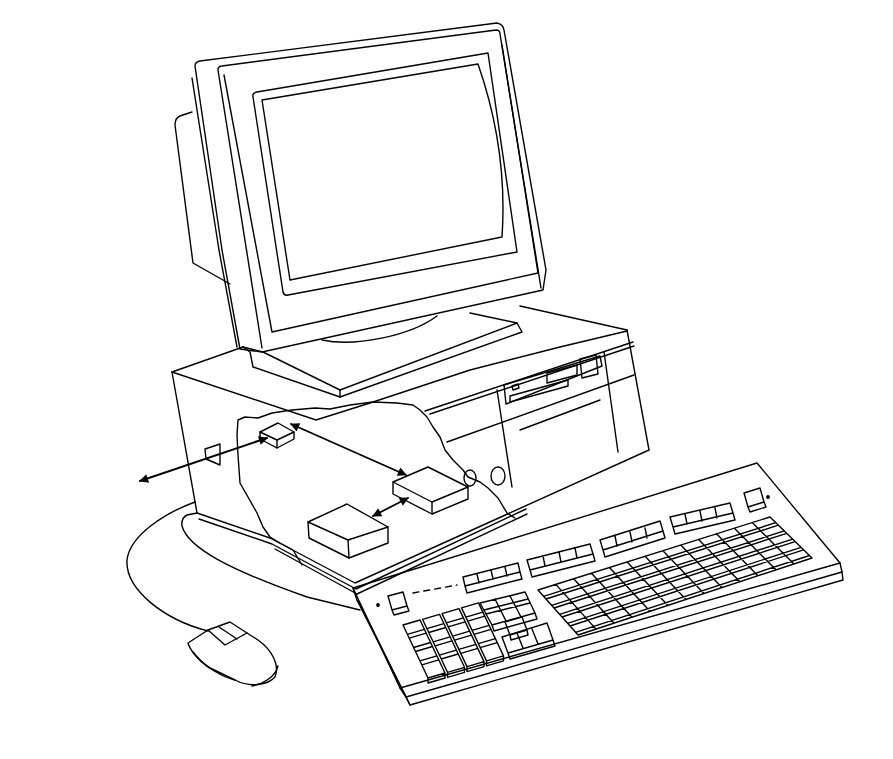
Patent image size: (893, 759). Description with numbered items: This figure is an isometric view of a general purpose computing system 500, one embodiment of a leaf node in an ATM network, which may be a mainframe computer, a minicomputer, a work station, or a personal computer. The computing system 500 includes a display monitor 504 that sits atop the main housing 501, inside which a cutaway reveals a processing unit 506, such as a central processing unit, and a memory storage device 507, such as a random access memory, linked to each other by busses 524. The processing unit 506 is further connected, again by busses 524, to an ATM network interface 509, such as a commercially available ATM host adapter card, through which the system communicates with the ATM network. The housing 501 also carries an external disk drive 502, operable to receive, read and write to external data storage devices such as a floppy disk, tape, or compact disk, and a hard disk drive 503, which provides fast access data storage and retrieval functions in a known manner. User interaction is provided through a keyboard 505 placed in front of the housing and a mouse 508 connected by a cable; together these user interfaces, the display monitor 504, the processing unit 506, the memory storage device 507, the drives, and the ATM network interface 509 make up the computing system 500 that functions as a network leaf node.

The general purpose computing system 500 is at (500, 8).
The computer housing 501 is at (613, 330).
The external disk drive 502 is at (600, 377).
The hard disk drive 503 is at (573, 407).
The display monitor 504 is at (227, 298).
The keyboard 505 is at (800, 457).
The processing unit 506 is at (422, 464).
The memory storage device 507 is at (322, 549).
The mouse 508 is at (190, 642).
The ATM network interface 509 is at (258, 423).
The busses 524 is at (384, 509).